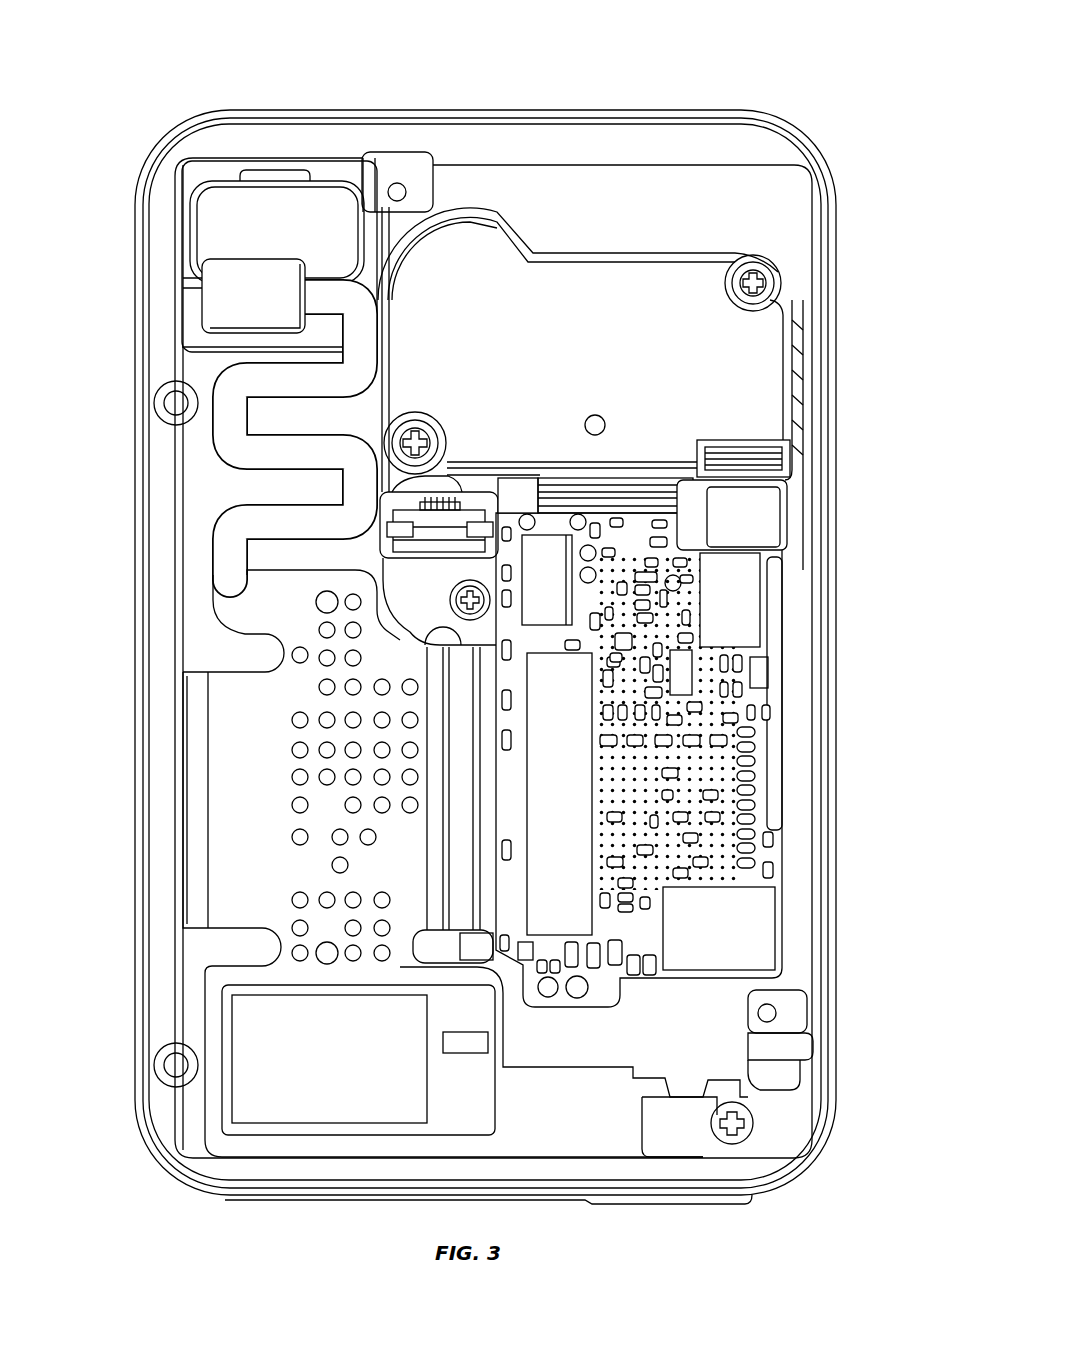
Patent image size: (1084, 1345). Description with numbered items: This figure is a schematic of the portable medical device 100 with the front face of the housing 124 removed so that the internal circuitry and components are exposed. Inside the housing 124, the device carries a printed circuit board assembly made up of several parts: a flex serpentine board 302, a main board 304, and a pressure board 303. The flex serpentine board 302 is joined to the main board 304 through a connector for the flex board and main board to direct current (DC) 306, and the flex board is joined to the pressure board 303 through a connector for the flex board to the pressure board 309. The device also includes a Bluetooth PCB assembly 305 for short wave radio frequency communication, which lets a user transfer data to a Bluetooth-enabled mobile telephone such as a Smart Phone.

The portable medical device 100 is at (577, 66).
The housing 124 is at (800, 122).
The flex serpentine board 302 is at (233, 788).
The pressure board 303 is at (328, 212).
The main board 304 is at (752, 856).
The Bluetooth PCB assembly 305 is at (405, 1104).
The connector for the flex board and main board to direct current (DC) 306 is at (620, 494).
The connector for the flex board to the pressure board 309 is at (448, 688).